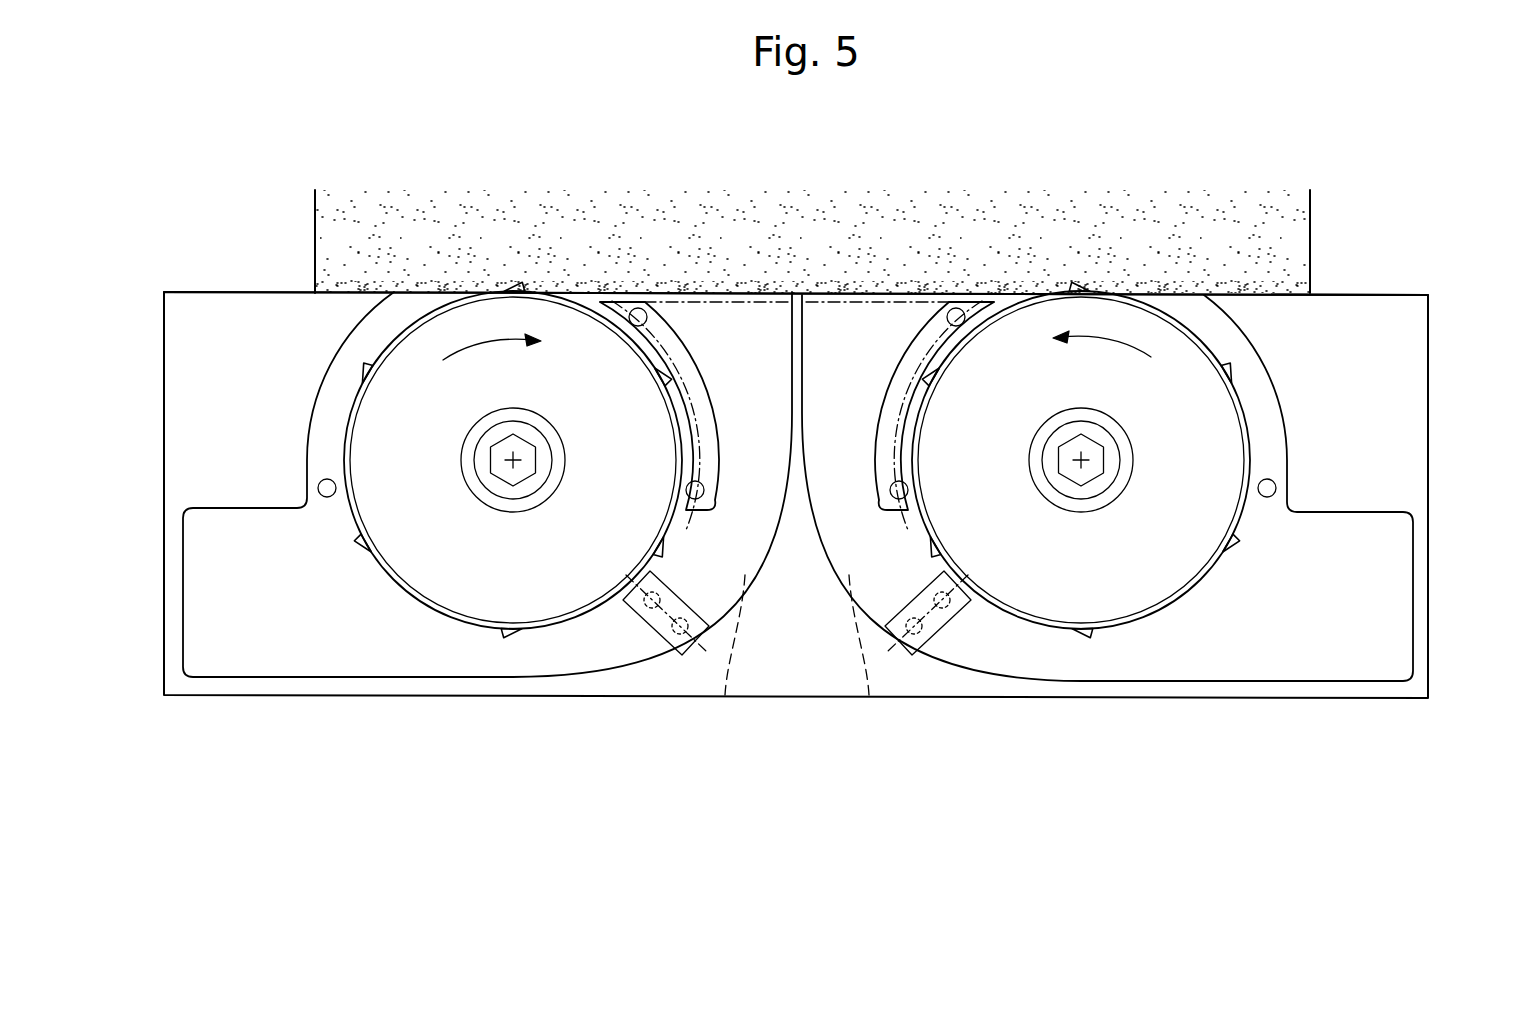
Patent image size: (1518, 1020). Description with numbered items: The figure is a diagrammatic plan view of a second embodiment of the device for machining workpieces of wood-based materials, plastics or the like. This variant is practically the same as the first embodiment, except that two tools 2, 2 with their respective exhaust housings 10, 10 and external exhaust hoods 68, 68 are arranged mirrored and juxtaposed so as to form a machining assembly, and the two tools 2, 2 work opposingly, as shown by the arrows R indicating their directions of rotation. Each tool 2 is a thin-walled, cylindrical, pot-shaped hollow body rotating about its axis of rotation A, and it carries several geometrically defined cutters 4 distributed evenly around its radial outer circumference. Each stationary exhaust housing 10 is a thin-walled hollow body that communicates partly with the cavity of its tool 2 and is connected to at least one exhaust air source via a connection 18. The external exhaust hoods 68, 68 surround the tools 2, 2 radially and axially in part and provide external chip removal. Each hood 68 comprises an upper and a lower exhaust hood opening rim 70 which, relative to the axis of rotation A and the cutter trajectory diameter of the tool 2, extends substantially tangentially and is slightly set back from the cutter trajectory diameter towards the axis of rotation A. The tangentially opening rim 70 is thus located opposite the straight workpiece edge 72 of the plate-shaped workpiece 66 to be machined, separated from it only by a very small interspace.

The tool 2 is at (568, 577).
The cutters 4 is at (510, 288).
The exhaust housing 10 is at (408, 660).
The connection 18 is at (200, 520).
The workpiece 66 is at (1250, 218).
The external exhaust hood 68 is at (725, 695).
The exhaust hood opening rim 70 is at (700, 298).
The workpiece edge 72 is at (333, 299).
The axis of rotation A is at (518, 468).
The direction of rotation R is at (797, 364).